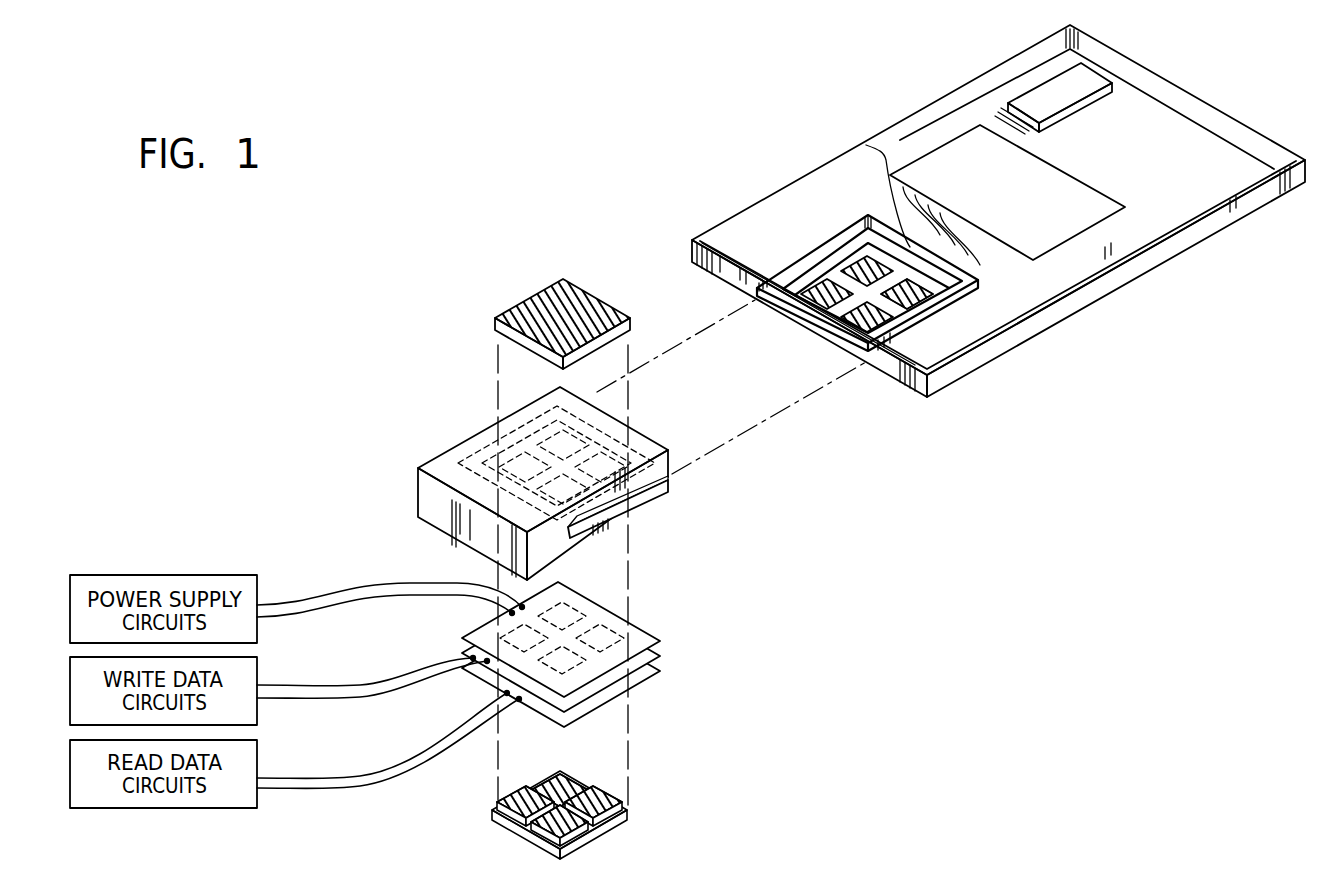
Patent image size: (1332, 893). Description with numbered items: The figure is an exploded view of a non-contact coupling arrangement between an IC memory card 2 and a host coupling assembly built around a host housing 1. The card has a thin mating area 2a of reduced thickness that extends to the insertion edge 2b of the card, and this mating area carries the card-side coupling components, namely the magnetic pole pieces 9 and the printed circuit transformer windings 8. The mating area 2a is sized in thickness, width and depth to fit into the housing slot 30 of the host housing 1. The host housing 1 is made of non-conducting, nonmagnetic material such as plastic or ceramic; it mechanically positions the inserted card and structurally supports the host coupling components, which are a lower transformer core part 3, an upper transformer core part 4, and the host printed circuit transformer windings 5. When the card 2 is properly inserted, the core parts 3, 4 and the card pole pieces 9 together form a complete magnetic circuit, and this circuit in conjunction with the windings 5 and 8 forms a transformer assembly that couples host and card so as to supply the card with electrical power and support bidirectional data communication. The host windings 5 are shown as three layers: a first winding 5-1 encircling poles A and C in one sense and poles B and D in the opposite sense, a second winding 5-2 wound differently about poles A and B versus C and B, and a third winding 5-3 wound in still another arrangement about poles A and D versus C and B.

The host housing 1 is at (418, 480).
The IC memory card 2 is at (1089, 310).
The mating area 2a is at (832, 338).
The insertion edge 2b is at (775, 310).
The lower transformer core part 3 is at (627, 821).
The upper transformer core part 4 is at (495, 319).
The printed circuit transformer windings 5 is at (681, 654).
The first winding 5-1 is at (660, 641).
The second winding 5-2 is at (660, 656).
The third host winding 5-3 is at (660, 671).
The printed circuit transformer windings 8 is at (824, 266).
The magnetic pole pieces 9 is at (919, 299).
The housing slot 30 is at (652, 502).